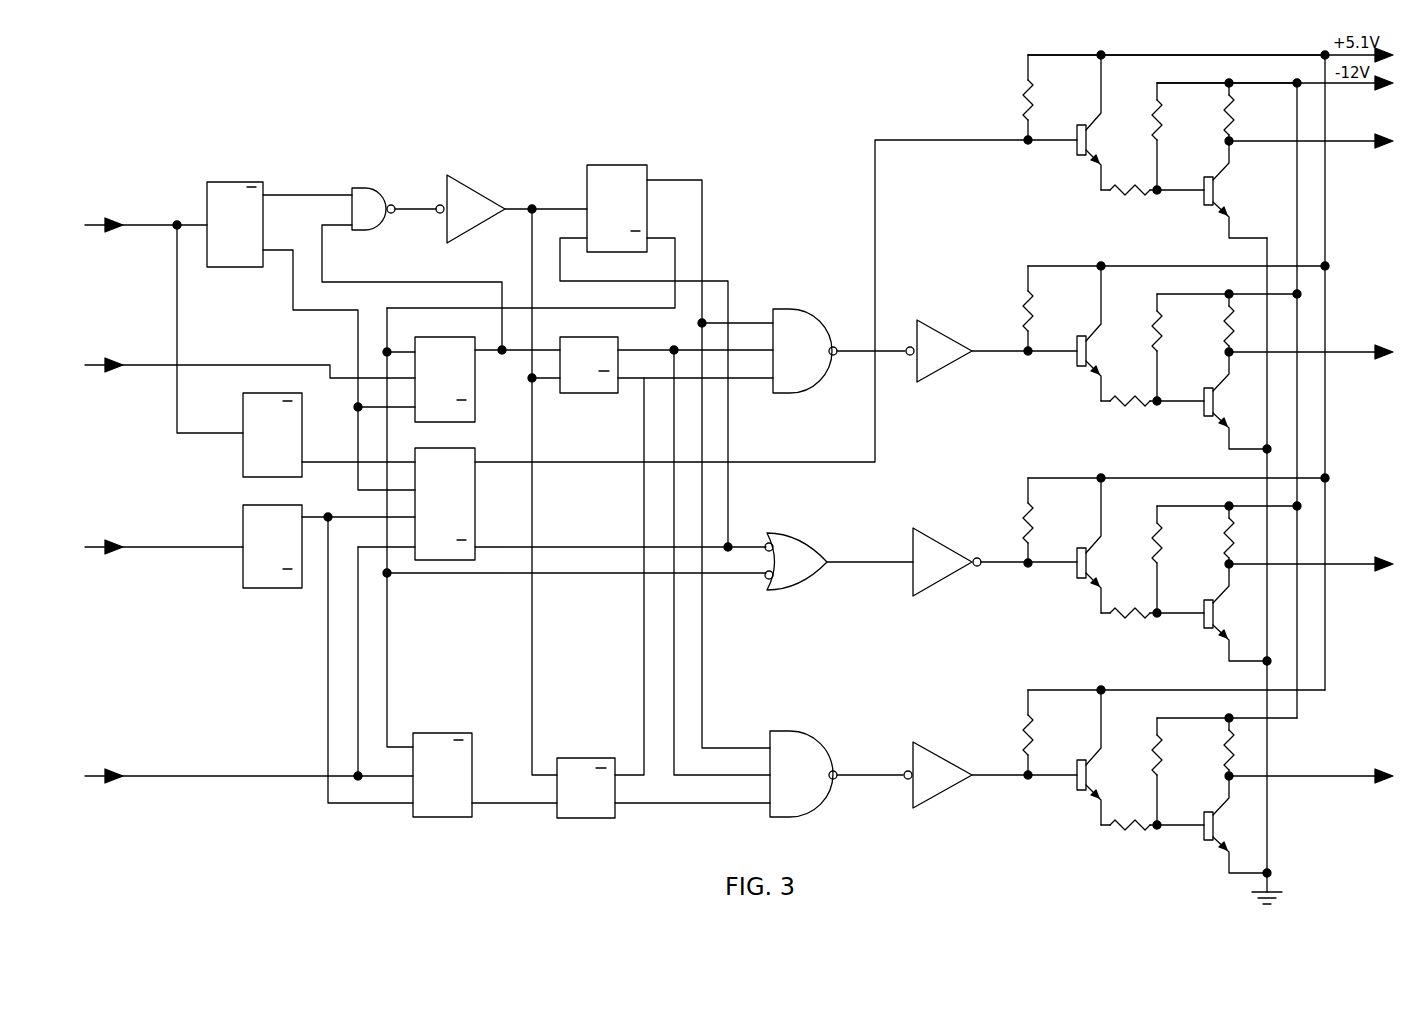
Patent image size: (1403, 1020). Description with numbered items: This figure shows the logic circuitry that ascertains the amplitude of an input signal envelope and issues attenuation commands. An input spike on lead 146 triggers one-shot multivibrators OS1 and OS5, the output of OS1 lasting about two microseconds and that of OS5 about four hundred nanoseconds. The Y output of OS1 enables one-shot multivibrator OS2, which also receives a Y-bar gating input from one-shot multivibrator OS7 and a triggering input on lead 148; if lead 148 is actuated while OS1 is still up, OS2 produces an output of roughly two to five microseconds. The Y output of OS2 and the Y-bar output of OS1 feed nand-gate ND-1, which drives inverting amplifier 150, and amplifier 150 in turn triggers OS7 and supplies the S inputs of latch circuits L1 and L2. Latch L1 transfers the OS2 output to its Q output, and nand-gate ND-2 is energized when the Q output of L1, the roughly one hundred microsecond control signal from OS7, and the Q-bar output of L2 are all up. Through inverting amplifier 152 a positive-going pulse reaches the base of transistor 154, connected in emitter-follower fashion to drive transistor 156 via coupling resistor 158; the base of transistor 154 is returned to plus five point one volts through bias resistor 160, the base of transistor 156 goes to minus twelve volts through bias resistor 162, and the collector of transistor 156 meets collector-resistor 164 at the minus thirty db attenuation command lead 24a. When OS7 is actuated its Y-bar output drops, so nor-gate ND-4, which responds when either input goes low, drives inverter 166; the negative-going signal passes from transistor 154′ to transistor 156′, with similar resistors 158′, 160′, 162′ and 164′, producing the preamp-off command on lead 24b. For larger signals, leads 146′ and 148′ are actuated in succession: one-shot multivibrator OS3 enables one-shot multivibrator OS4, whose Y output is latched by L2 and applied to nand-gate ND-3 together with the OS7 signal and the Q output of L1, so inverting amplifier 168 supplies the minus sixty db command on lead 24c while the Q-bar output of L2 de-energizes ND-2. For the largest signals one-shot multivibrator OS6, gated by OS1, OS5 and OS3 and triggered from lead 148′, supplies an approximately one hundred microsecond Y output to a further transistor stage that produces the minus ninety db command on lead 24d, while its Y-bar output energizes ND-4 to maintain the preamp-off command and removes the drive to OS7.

The lead 146 is at (95, 225).
The lead 148 is at (95, 365).
The lead 146′ is at (95, 547).
The lead 148′ is at (95, 776).
The one-shot multivibrator OS1 is at (226, 182).
The one-shot multivibrator OS2 is at (475, 385).
The one-shot multivibrator OS3 is at (262, 588).
The one-shot multivibrator OS4 is at (438, 733).
The one-shot multivibrator OS5 is at (243, 468).
The one-shot multivibrator OS6 is at (475, 480).
The one-shot multivibrator OS7 is at (603, 165).
The latch circuit L1 is at (572, 393).
The latch circuit L2 is at (575, 758).
The nand-gate ND-1 is at (412, 269).
The nand-gate ND-2 is at (839, 351).
The nand-gate ND-3 is at (836, 774).
The nor-gate ND-4 is at (839, 561).
The inverting amplifier 150 is at (472, 190).
The inverting amplifier 152 is at (940, 372).
The inverter 166 is at (940, 583).
The inverting amplifier 168 is at (935, 797).
The transistor 154 is at (1065, 333).
The transistor 154′ is at (1065, 545).
The transistor 156 is at (1212, 400).
The transistor 156′ is at (1212, 612).
The coupling resistor 158 is at (1119, 414).
The coupling resistor 158′ is at (1117, 628).
The bias resistor 160 is at (1004, 308).
The bias resistor 160′ is at (1000, 520).
The bias resistor 162 is at (1183, 347).
The bias resistor 162′ is at (1187, 559).
The collector-resistor 164 is at (1204, 323).
The collector-resistor 164′ is at (1202, 535).
The −30 db attenuation command output lead 24a is at (1390, 360).
The preamp-off command lead 24b is at (1390, 574).
The −60 db attenuation command lead 24c is at (1390, 786).
The −90 db attenuation command lead 24d is at (1390, 150).